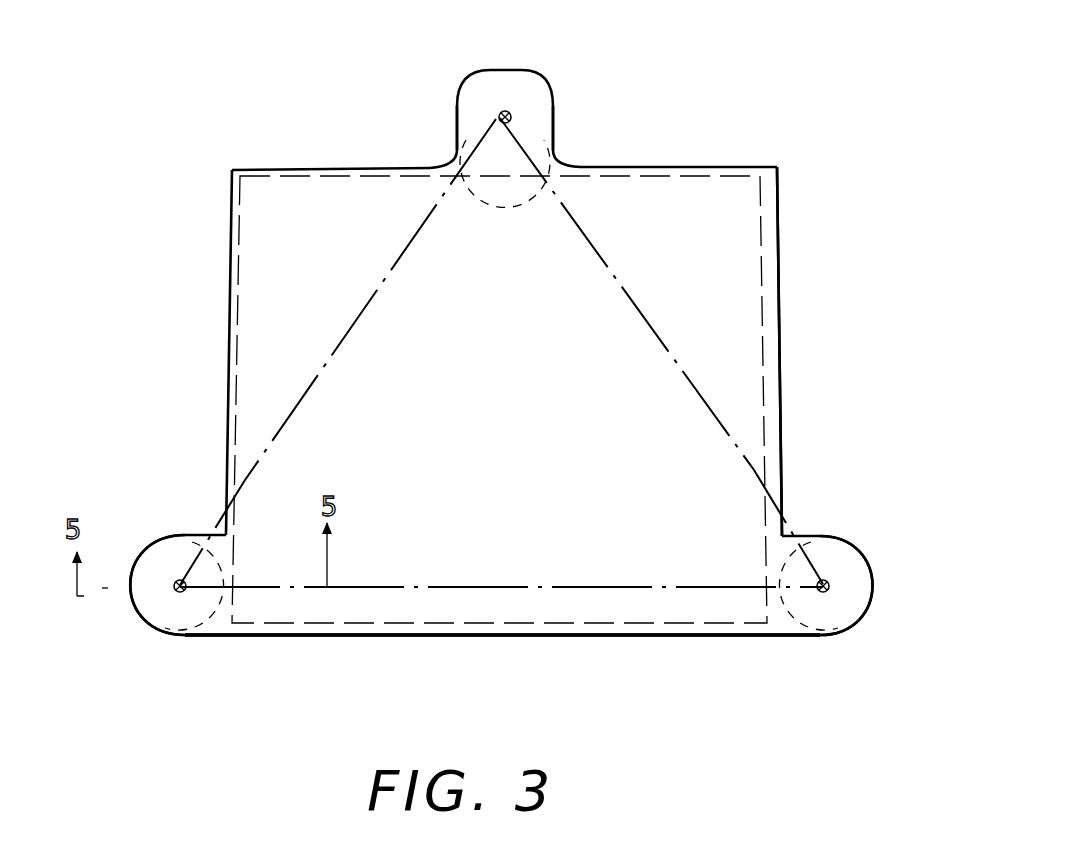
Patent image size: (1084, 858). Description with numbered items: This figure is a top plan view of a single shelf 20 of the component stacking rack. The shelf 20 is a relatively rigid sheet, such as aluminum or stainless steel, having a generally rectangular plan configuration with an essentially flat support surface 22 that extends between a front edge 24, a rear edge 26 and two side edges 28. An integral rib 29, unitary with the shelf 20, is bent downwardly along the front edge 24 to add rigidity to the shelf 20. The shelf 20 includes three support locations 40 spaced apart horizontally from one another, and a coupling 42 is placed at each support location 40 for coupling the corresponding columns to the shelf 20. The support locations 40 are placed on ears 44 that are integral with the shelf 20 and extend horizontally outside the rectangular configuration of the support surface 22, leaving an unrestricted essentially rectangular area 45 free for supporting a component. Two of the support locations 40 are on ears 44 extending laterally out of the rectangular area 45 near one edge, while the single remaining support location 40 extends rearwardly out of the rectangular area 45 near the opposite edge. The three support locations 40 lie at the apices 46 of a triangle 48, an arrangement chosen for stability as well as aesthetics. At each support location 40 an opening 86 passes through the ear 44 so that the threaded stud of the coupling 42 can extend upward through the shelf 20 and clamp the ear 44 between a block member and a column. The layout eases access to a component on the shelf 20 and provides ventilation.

The shelf 20 is at (508, 379).
The support surface 22 is at (747, 232).
The front edge 24 is at (440, 638).
The rear edge 26 is at (652, 167).
The side edges 28 is at (228, 377).
The integral rib 29 is at (570, 639).
The support locations 40 is at (548, 97).
The coupling 42 is at (503, 166).
The ears 44 is at (460, 100).
The rectangular area 45 is at (763, 303).
The apices 46 is at (507, 112).
The triangle 48 is at (326, 362).
The opening 86 is at (507, 115).